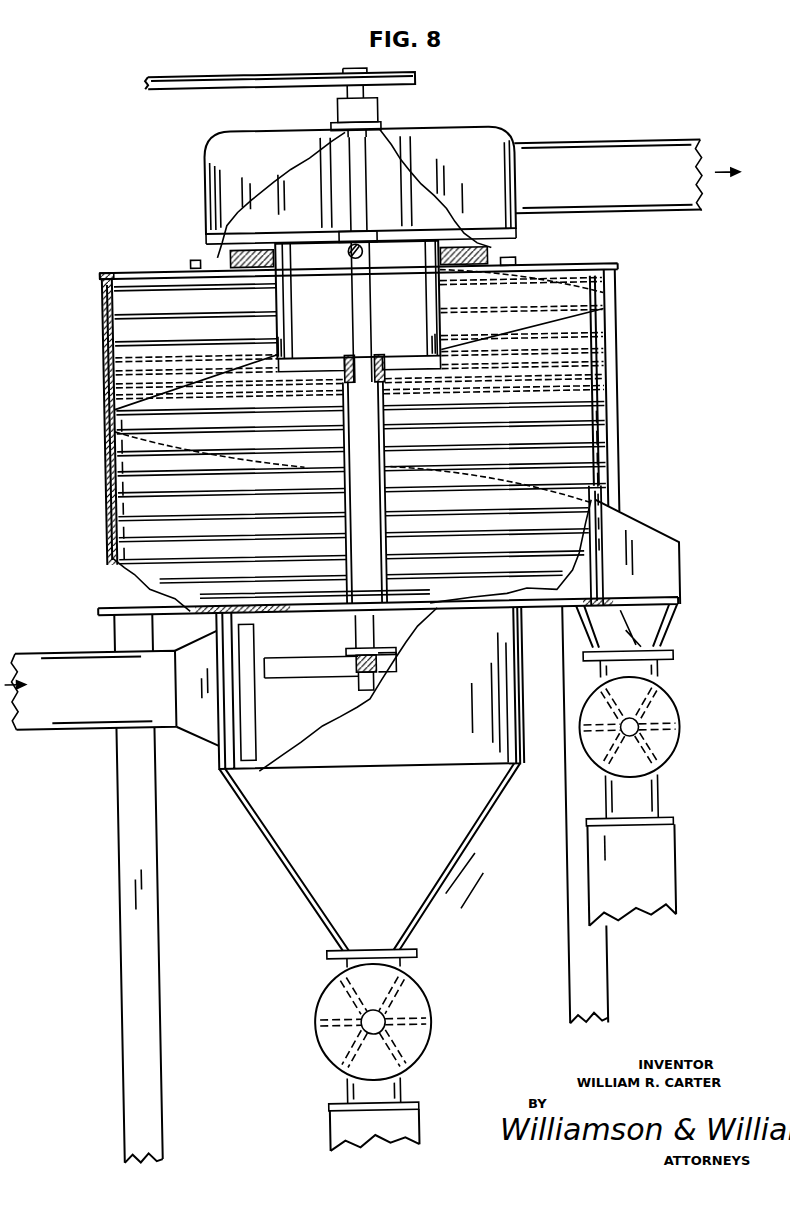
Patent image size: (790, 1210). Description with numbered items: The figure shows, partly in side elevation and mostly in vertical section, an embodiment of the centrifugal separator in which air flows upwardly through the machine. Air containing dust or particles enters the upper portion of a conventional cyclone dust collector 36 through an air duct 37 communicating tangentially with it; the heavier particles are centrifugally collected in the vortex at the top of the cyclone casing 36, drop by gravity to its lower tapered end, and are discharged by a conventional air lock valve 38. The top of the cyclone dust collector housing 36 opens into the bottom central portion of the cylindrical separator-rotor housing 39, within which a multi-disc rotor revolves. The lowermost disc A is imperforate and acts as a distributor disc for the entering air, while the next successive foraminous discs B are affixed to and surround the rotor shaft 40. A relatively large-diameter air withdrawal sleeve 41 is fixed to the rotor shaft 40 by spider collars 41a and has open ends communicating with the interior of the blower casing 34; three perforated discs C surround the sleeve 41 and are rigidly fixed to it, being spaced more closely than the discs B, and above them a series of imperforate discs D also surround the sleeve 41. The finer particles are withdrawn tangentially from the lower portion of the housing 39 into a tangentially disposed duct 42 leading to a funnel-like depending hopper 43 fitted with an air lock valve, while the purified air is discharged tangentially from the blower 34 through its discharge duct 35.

The blower 34 is at (428, 196).
The discharge duct 35 is at (652, 162).
The cyclone dust collector 36 is at (254, 798).
The air duct 37 is at (90, 719).
The air lock valve 38 is at (388, 1000).
The separator-rotor housing 39 is at (113, 524).
The rotor shaft 40 is at (368, 340).
The air withdrawal sleeve 41 is at (438, 281).
The spider collars 41a is at (368, 270).
The tangentially disposed duct 42 is at (658, 558).
The depending hopper 43 is at (655, 682).
The lowermost disc A is at (430, 584).
The foraminous discs B is at (620, 397).
The perforated discs C is at (603, 367).
The zone D is at (598, 322).